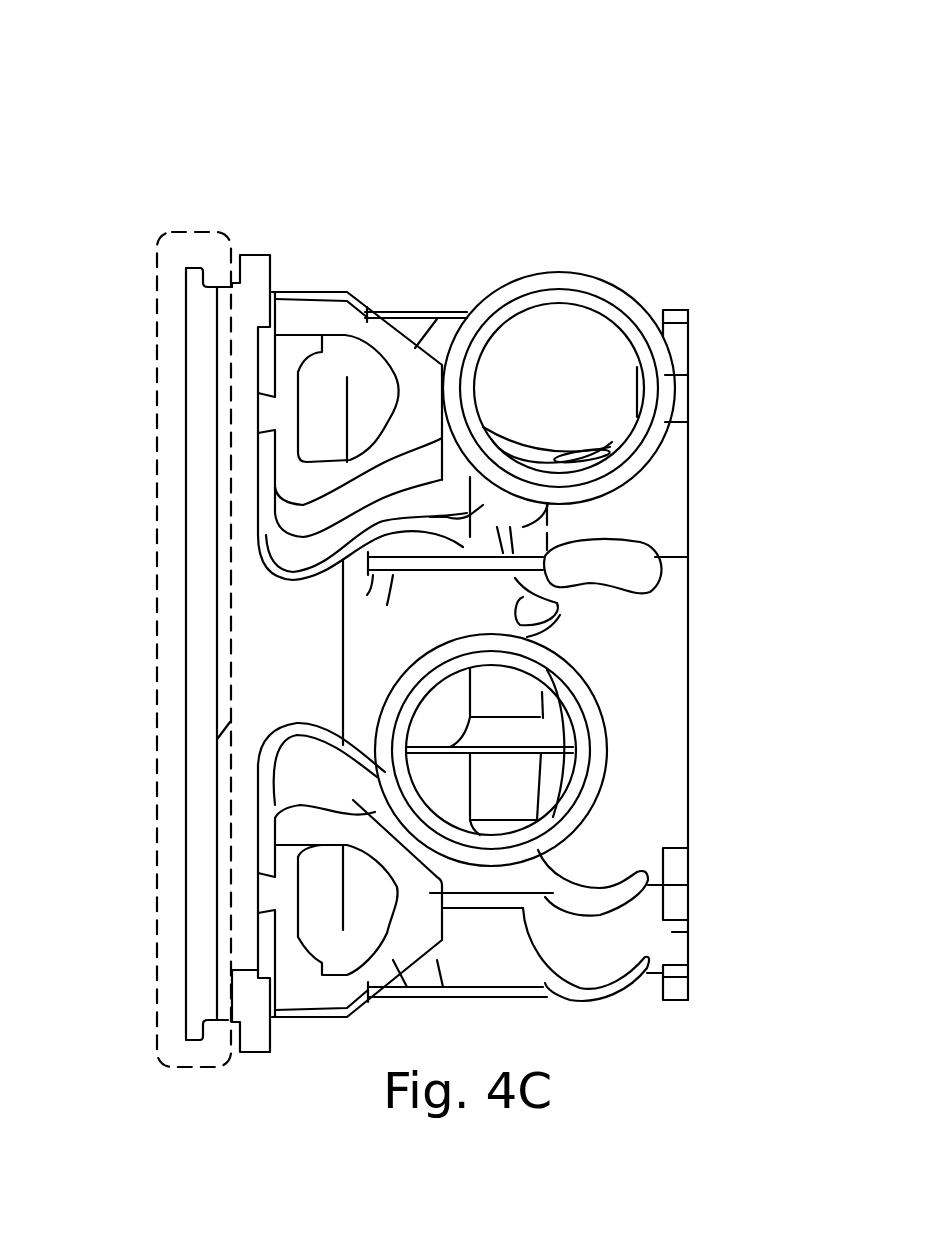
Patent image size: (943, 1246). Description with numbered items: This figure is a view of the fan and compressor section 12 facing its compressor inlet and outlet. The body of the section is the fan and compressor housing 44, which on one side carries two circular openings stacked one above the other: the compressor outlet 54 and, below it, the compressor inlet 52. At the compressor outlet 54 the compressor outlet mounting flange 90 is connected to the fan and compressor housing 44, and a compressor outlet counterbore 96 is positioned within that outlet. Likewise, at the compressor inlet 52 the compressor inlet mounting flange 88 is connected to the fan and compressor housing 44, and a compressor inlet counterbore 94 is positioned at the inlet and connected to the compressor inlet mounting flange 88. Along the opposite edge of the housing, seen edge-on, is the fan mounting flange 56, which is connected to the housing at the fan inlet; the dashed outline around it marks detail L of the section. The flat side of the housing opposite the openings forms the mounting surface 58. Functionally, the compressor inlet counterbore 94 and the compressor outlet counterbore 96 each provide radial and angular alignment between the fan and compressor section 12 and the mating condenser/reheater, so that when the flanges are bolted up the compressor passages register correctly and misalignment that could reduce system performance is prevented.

The fan and compressor section 12 is at (435, 653).
The fan mounting flange 56 is at (183, 277).
The detail L is at (157, 360).
The fan and compressor housing 44 is at (400, 330).
The compressor outlet mounting flange 90 is at (517, 293).
The compressor outlet counterbore 96 is at (609, 318).
The compressor outlet 54 is at (563, 357).
The mounting surface 58 is at (690, 395).
The compressor inlet mounting flange 88 is at (585, 683).
The compressor inlet counterbore 94 is at (578, 782).
The compressor inlet 52 is at (558, 750).